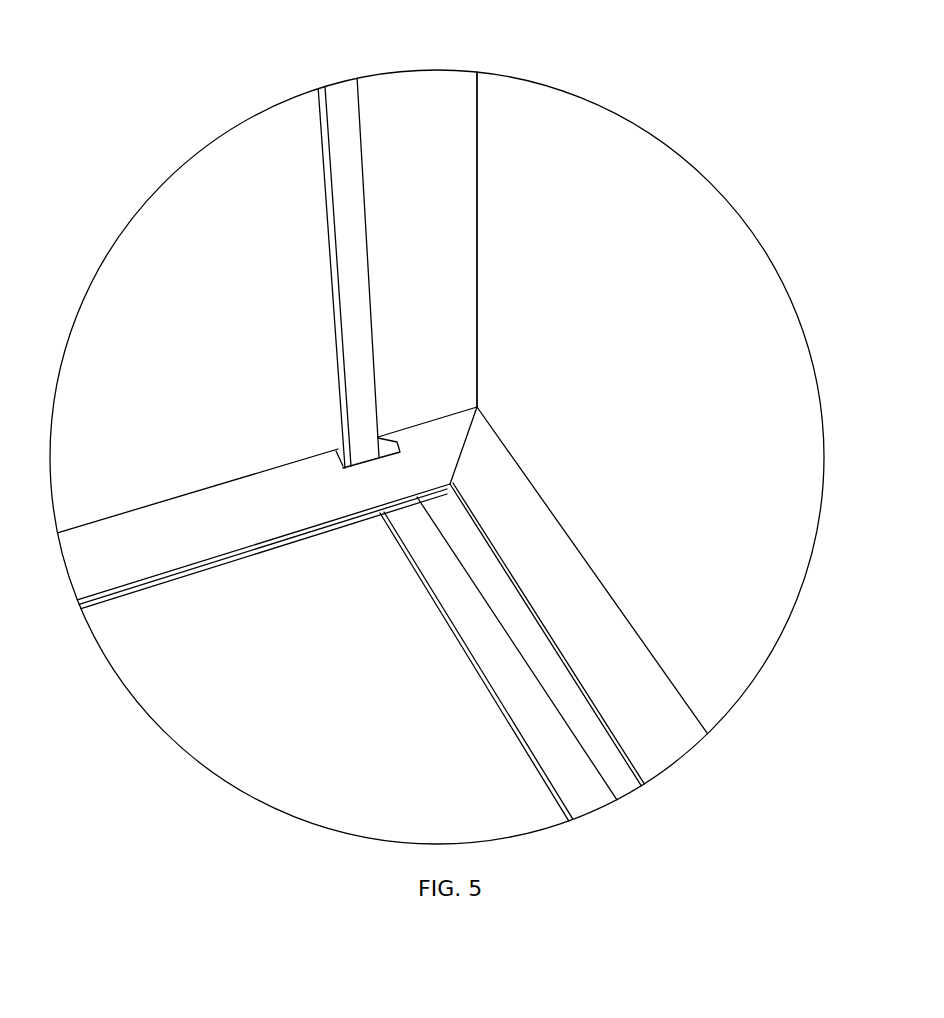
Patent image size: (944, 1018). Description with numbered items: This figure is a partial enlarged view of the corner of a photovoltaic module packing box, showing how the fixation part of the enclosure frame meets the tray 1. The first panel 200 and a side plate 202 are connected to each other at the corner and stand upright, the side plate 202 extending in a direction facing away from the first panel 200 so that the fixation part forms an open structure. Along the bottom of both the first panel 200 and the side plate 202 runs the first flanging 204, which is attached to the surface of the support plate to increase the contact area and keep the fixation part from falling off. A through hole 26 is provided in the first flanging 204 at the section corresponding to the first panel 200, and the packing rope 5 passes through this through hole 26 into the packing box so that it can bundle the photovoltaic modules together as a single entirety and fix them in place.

The tray 1 is at (212, 713).
The packing rope 5 is at (580, 778).
The through hole 26 is at (343, 468).
The first panel 200 is at (217, 183).
The side plate 202 is at (743, 297).
The first flanging 204 is at (138, 558).